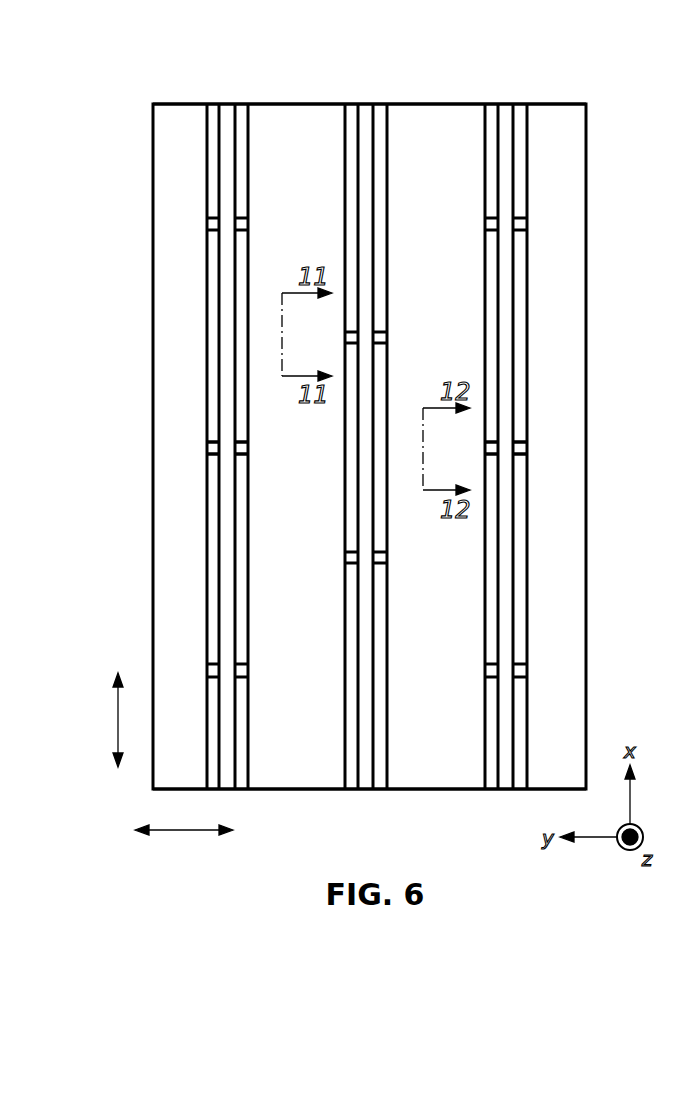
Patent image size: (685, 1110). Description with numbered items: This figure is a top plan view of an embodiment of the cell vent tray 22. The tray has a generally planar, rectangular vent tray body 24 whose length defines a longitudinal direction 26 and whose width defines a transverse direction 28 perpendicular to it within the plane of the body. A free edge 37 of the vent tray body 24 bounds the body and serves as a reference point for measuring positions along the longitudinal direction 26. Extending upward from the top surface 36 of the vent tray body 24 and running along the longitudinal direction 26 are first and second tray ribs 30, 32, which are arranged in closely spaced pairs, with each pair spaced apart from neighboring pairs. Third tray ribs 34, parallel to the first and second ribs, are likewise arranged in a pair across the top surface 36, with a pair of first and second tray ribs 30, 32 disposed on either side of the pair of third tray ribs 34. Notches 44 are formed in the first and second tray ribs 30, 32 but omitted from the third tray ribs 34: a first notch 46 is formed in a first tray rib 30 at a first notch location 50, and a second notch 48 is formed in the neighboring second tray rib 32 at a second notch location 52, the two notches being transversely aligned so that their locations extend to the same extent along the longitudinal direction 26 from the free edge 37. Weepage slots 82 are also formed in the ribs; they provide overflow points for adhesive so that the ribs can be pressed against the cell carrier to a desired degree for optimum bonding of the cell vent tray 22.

The cell vent tray 22 is at (108, 74).
The vent tray body 24 is at (366, 422).
The top surface 36 is at (366, 422).
The longitudinal direction 26 is at (118, 712).
The transverse direction 28 is at (170, 832).
The first tray rib 30 is at (213, 255).
The second tray rib 32 is at (243, 318).
The third tray rib 34 is at (352, 613).
The free edge 37 is at (470, 104).
The notch 44 is at (366, 447).
The first notch 46 is at (215, 445).
The second notch 48 is at (240, 445).
The first notch location 50 is at (176, 464).
The second notch location 52 is at (263, 471).
The weepage slot 82 is at (352, 332).